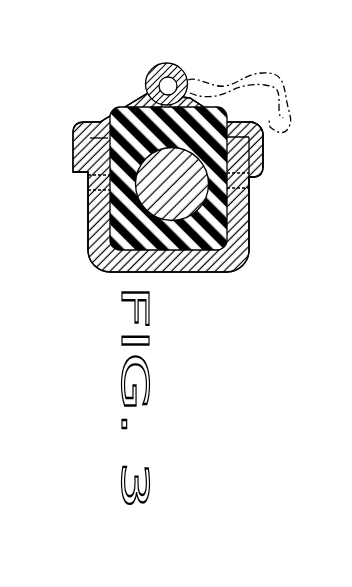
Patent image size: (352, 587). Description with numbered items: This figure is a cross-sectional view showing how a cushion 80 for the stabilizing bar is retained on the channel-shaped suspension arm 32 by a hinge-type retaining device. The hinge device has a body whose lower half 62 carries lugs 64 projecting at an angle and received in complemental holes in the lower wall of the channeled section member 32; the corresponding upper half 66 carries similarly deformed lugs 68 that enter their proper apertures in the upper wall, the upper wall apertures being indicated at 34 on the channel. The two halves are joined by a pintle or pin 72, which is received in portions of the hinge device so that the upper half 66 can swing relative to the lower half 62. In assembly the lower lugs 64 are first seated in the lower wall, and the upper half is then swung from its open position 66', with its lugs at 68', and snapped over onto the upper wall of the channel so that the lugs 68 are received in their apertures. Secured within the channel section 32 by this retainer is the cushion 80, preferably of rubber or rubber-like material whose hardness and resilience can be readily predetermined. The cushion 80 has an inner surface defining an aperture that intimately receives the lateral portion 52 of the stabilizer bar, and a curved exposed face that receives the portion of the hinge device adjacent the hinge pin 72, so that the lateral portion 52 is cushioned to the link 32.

The suspension arm 32 is at (244, 226).
The bore 34 is at (250, 200).
The lateral portion 52 is at (172, 184).
The lower half 62 is at (73, 135).
The lugs 64 is at (87, 177).
The upper half 66 is at (272, 149).
The position of upper half 66' is at (242, 78).
The lugs 68 is at (283, 213).
The wall (deflected position) 68' is at (267, 109).
The pintle or pin 72 is at (155, 71).
The cushion 80 is at (88, 232).